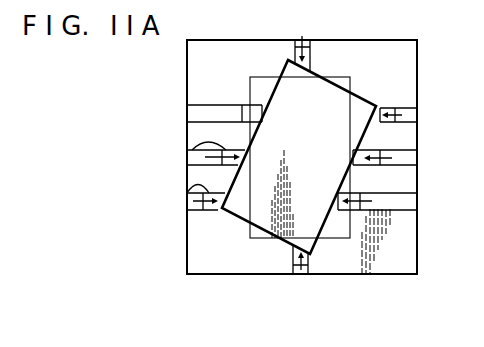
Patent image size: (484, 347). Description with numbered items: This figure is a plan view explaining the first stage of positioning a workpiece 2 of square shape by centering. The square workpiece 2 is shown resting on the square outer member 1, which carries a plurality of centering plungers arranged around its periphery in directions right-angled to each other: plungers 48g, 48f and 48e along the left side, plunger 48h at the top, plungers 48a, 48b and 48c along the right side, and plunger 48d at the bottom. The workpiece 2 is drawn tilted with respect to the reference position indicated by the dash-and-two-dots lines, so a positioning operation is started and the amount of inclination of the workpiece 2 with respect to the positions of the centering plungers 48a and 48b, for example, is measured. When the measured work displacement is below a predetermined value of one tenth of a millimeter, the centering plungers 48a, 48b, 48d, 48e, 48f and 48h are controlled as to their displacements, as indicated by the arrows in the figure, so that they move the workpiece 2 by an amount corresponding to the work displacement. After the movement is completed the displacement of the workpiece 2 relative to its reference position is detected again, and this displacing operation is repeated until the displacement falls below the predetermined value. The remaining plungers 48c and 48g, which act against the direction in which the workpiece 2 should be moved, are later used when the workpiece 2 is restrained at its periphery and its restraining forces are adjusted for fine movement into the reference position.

The stage 1 is at (417, 266).
The workpiece 2 is at (379, 101).
The centering plunger 48a is at (390, 123).
The centering plunger 48b is at (373, 167).
The centering plunger 48c is at (357, 212).
The centering plunger 48d is at (295, 262).
The centering plunger 48e is at (188, 191).
The centering plunger 48f is at (187, 151).
The centering plunger 48g is at (249, 105).
The centering plunger 48h is at (292, 58).